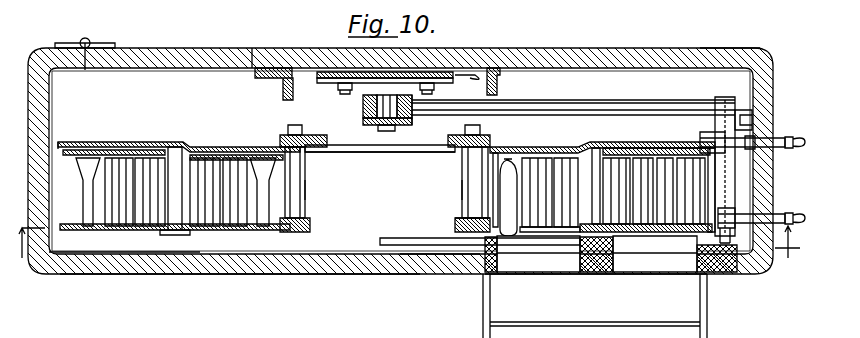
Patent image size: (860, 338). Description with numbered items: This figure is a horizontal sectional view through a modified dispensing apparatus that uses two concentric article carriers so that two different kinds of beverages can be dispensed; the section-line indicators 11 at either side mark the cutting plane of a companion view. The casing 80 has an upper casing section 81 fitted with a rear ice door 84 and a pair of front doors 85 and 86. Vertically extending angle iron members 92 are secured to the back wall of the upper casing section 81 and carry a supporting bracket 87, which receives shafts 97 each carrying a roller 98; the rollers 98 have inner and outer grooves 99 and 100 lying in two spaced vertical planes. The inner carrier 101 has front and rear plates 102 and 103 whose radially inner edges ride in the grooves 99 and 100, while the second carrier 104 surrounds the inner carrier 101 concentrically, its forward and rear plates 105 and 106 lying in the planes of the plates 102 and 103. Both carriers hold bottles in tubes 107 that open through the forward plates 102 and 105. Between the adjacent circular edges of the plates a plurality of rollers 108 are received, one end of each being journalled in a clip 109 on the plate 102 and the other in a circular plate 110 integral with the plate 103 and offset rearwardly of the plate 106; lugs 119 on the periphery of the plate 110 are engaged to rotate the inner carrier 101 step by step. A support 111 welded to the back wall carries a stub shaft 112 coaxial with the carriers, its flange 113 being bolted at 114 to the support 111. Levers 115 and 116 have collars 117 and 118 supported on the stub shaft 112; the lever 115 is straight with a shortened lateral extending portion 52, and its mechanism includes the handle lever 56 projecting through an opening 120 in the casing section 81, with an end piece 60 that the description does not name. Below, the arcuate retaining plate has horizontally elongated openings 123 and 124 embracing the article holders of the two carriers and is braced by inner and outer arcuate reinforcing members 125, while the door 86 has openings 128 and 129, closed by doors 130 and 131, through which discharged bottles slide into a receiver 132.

The section line 11 is at (407, 264).
The lateral extending portion 52 is at (742, 116).
The handle lever 56 is at (768, 140).
The knob 60 is at (793, 148).
The casing 80 is at (769, 52).
The upper casing section 81 is at (722, 50).
The rear ice door 84 is at (252, 50).
The front door 85 is at (244, 274).
The front door 86 is at (428, 272).
The supporting bracket 87 is at (320, 156).
The angle iron members 92 is at (272, 84).
The shafts 97 is at (298, 131).
The roller 98 is at (304, 194).
The grooves 99 is at (460, 213).
The grooves 100 is at (470, 151).
The inner carrier 101 is at (207, 146).
The front plate 102 is at (230, 233).
The rear plate 103 is at (246, 152).
The second carrier 104 is at (130, 252).
The forward plate 105 is at (124, 231).
The rear plate 106 is at (130, 142).
The tubes 107 is at (158, 142).
The rollers 108 is at (192, 146).
The clip 109 is at (180, 235).
The circular plate 110 is at (96, 142).
The support 111 is at (480, 76).
The stub shaft 112 is at (368, 119).
The flange 113 is at (340, 84).
The bolt 114 is at (345, 72).
The lever 115 is at (622, 110).
The lever 116 is at (664, 104).
The collar 117 is at (414, 120).
The collar 118 is at (380, 106).
The lugs 119 is at (62, 142).
The opening 120 is at (745, 122).
The opening 123 is at (630, 247).
The opening 124 is at (548, 244).
The arcuate reinforcing members 125 is at (380, 250).
The opening 128 is at (668, 268).
The opening 129 is at (530, 270).
The door 130 is at (618, 282).
The door 131 is at (556, 280).
The receiver 132 is at (482, 328).